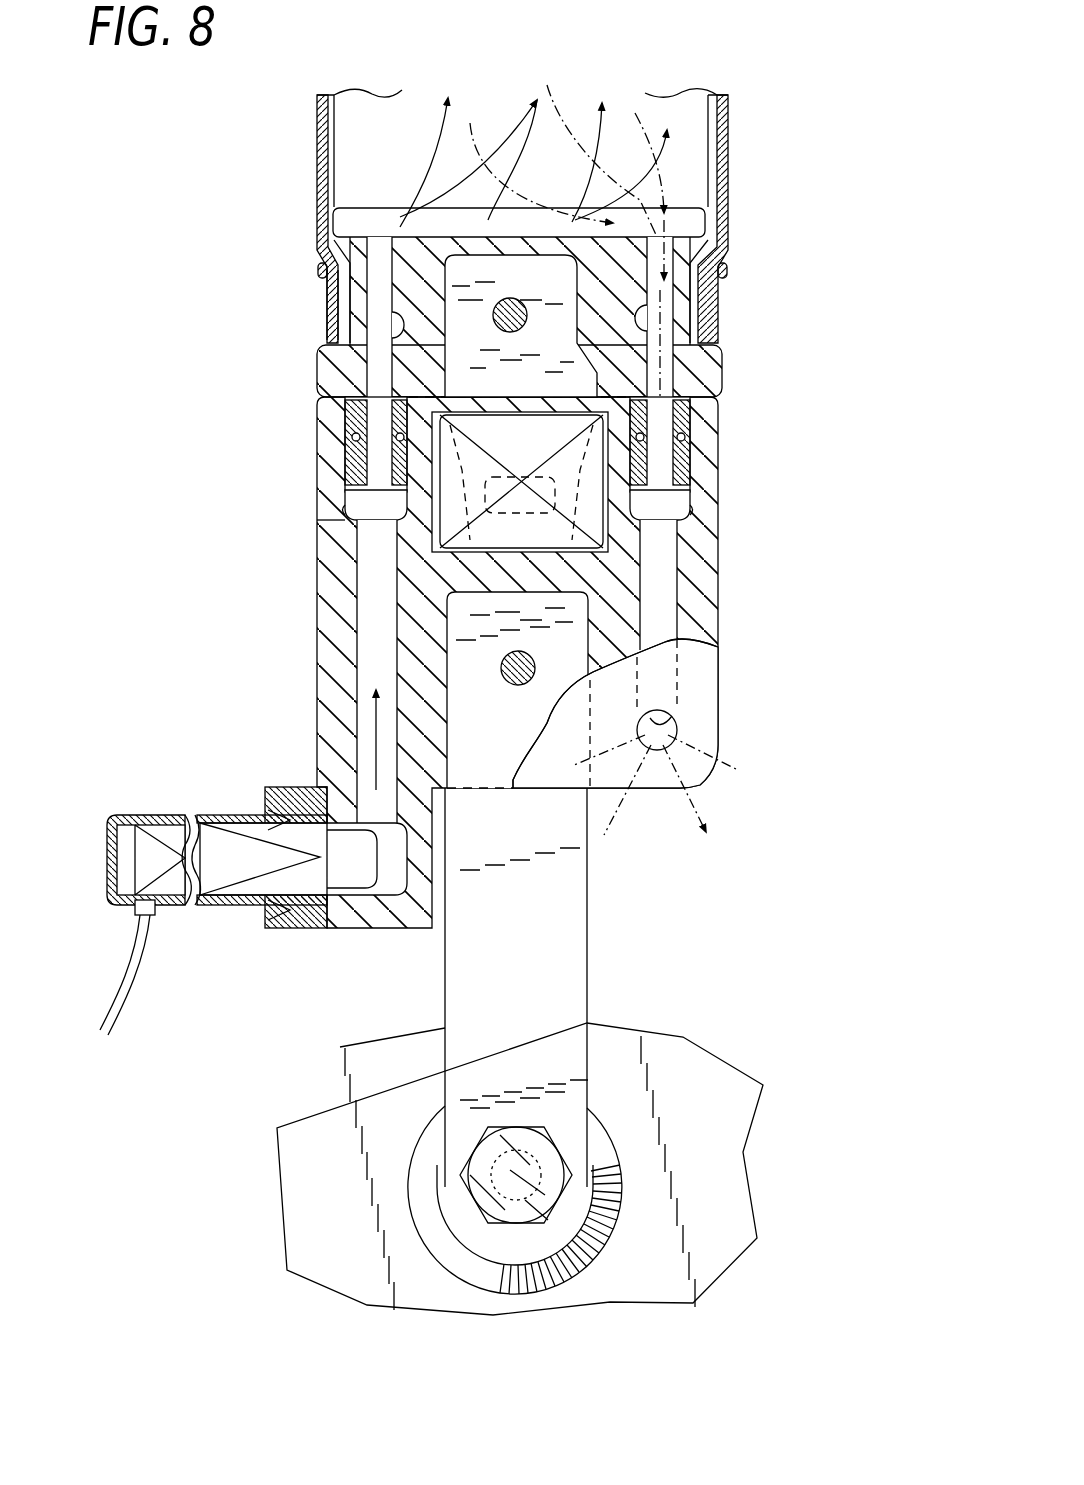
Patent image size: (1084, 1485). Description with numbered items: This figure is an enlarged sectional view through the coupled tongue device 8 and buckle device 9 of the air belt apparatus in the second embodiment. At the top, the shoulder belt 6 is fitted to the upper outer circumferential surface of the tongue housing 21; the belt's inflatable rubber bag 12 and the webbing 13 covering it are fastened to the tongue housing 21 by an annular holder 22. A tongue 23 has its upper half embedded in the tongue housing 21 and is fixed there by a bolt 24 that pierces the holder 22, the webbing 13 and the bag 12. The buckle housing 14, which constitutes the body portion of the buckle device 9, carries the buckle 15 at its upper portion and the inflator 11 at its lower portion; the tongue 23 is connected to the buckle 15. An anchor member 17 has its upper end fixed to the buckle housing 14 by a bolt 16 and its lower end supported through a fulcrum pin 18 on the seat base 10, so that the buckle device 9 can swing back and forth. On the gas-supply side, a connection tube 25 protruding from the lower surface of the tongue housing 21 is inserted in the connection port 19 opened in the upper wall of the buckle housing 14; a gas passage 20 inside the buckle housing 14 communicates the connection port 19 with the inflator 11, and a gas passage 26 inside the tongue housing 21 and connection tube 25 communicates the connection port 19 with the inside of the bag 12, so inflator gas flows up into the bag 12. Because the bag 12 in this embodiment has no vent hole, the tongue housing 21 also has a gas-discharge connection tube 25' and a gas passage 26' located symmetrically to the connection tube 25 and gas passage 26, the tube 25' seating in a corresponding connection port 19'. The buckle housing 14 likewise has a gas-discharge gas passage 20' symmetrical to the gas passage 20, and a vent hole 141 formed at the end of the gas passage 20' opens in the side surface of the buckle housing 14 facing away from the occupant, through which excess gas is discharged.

The shoulder belt 6 is at (730, 170).
The tongue device 8 is at (725, 345).
The buckle device 9 is at (722, 452).
The seat base 10 is at (683, 1047).
The inflator 11 is at (217, 893).
The inflatable rubber bag 12 is at (378, 253).
The webbing 13 is at (322, 150).
The buckle housing 14 is at (318, 716).
The vent hole 141 is at (668, 726).
The buckle 15 is at (580, 540).
The bolt 16 is at (512, 686).
The anchor member 17 is at (590, 903).
The fulcrum pin 18 is at (537, 1203).
The connection port 19 is at (321, 521).
The connection port 19' is at (710, 484).
The gas passage 20 is at (325, 672).
The gas-discharge gas passage 20' is at (717, 572).
The tongue housing 21 is at (320, 375).
The annular holder 22 is at (325, 300).
The tongue 23 is at (520, 527).
The bolt 24 is at (527, 317).
The connection tube 25 is at (321, 444).
The gas-discharge connection tube 25' is at (710, 433).
The gas passage 26 is at (440, 338).
The gas passage 26' is at (711, 324).